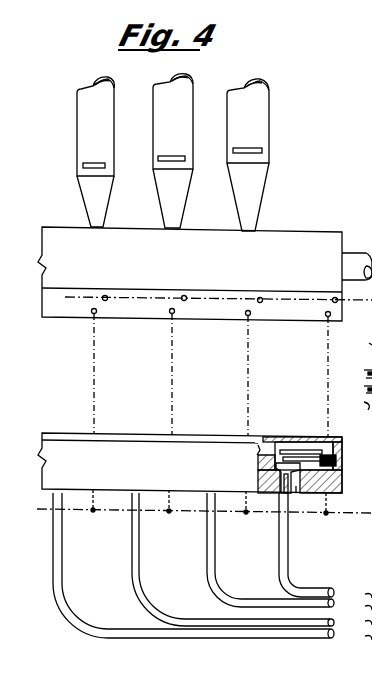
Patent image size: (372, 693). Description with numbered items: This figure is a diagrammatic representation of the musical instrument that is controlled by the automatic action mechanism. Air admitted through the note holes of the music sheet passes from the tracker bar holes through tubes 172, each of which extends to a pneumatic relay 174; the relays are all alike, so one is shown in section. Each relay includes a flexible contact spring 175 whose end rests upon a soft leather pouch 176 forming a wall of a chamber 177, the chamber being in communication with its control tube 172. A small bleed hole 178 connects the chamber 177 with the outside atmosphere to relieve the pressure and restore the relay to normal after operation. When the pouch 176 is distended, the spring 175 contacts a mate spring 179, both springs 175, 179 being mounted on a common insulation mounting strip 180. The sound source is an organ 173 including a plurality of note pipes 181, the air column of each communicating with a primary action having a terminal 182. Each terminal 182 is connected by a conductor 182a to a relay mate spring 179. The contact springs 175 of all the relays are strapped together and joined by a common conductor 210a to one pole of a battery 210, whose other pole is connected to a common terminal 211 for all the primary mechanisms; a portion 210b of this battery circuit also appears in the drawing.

The tubes 172 is at (214, 612).
The organ 173 is at (205, 263).
The pneumatic relay 174 is at (280, 441).
The flexible contact spring 175 is at (308, 458).
The soft leather pouch 176 is at (282, 476).
The chamber 177 is at (258, 470).
The bleed hole 178 is at (297, 493).
The mate spring 179 is at (292, 452).
The insulation mounting strip 180 is at (336, 462).
The note pipes 181 is at (95, 152).
The terminal 182 is at (170, 315).
The conductor 182a is at (170, 391).
The battery 210 is at (369, 368).
The common conductor 210a is at (352, 405).
The rack upper part 210b is at (355, 339).
The common terminal 211 is at (107, 296).